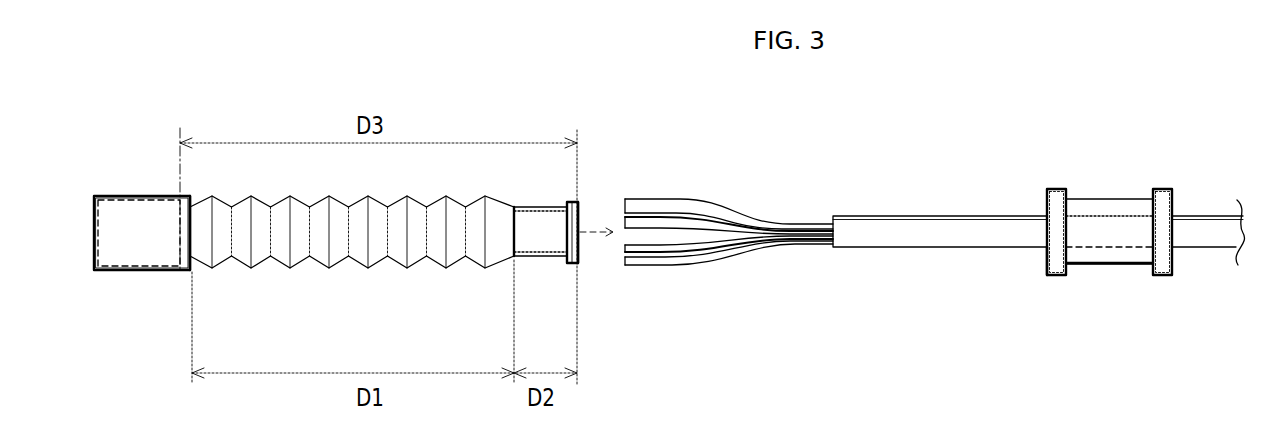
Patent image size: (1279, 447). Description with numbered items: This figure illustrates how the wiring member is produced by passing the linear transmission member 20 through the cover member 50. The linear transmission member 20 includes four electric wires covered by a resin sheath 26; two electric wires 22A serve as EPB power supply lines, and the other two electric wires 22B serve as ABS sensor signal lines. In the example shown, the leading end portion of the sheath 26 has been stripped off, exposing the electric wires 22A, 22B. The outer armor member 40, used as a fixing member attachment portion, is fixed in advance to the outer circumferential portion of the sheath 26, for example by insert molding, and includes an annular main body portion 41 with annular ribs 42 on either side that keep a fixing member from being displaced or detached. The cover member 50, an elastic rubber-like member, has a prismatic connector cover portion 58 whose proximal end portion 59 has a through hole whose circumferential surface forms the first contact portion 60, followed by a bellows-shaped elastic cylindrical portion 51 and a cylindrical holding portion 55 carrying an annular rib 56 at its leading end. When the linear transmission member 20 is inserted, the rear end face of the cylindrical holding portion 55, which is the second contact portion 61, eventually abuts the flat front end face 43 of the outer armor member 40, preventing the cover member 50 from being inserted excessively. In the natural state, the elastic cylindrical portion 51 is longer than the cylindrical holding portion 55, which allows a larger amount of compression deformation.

The cover member 50 is at (124, 168).
The connector cover portion 58 is at (107, 272).
The first contact portion 60 is at (178, 236).
The proximal end portion 59 is at (188, 274).
The elastic cylindrical portion 51 is at (390, 272).
The cylindrical holding portion 55 is at (541, 270).
The rib 56 is at (569, 202).
The second contact portion 61 is at (580, 218).
The electric wires 22A is at (651, 214).
The electric wires 22B is at (661, 248).
The sheath 26 is at (896, 249).
The linear transmission member 20 is at (1039, 217).
The outer armor member 40 is at (1100, 211).
The ribs 42 is at (1056, 189).
The main body portion 41 is at (1104, 199).
The front end face 43 is at (1047, 263).